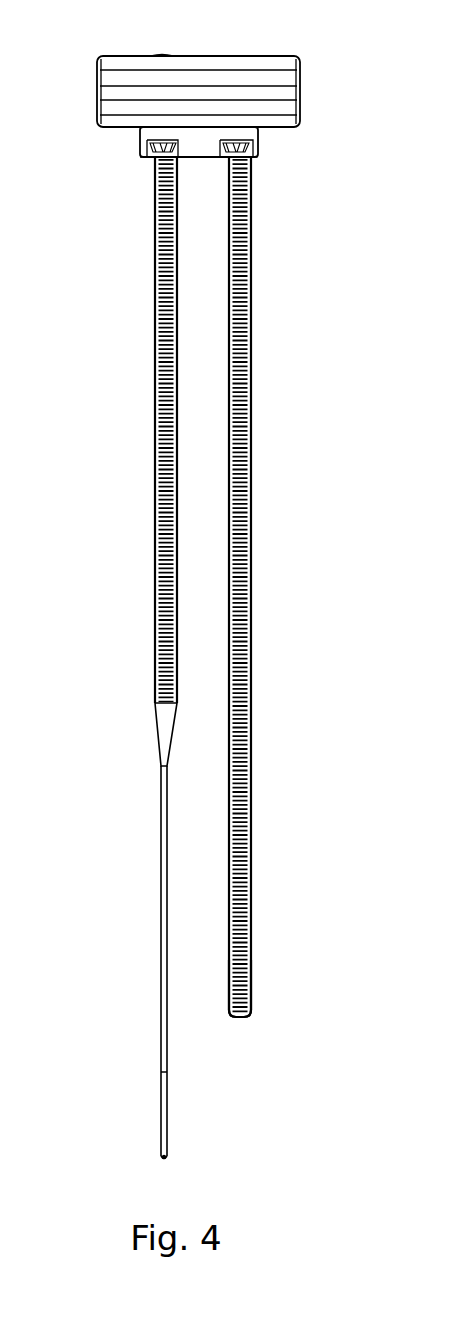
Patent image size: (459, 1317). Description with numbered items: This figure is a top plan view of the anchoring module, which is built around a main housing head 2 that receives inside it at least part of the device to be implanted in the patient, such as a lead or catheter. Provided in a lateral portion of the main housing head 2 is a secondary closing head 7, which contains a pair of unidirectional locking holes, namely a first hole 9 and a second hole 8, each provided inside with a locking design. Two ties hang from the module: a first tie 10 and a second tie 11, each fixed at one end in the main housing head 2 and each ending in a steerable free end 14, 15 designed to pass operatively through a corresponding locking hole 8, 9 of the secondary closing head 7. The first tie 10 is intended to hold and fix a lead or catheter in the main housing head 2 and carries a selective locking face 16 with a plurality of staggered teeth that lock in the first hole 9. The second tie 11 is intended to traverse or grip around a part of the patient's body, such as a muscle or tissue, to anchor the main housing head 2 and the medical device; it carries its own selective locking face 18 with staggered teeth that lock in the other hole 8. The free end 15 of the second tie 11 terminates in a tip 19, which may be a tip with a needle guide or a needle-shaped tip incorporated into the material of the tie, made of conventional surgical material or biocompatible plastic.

The main housing head 2 is at (211, 62).
The secondary closing head 7 is at (200, 150).
The second unidirectional locking hole 8 is at (155, 158).
The first unidirectional locking hole 9 is at (248, 158).
The first tie 10 is at (279, 587).
The second tie 11 is at (108, 673).
The free end of first tie 14 is at (257, 958).
The free end of second tie 15 is at (131, 966).
The selective locking face 16 is at (245, 403).
The selective locking face 18 is at (163, 322).
The tip 19 is at (157, 1113).